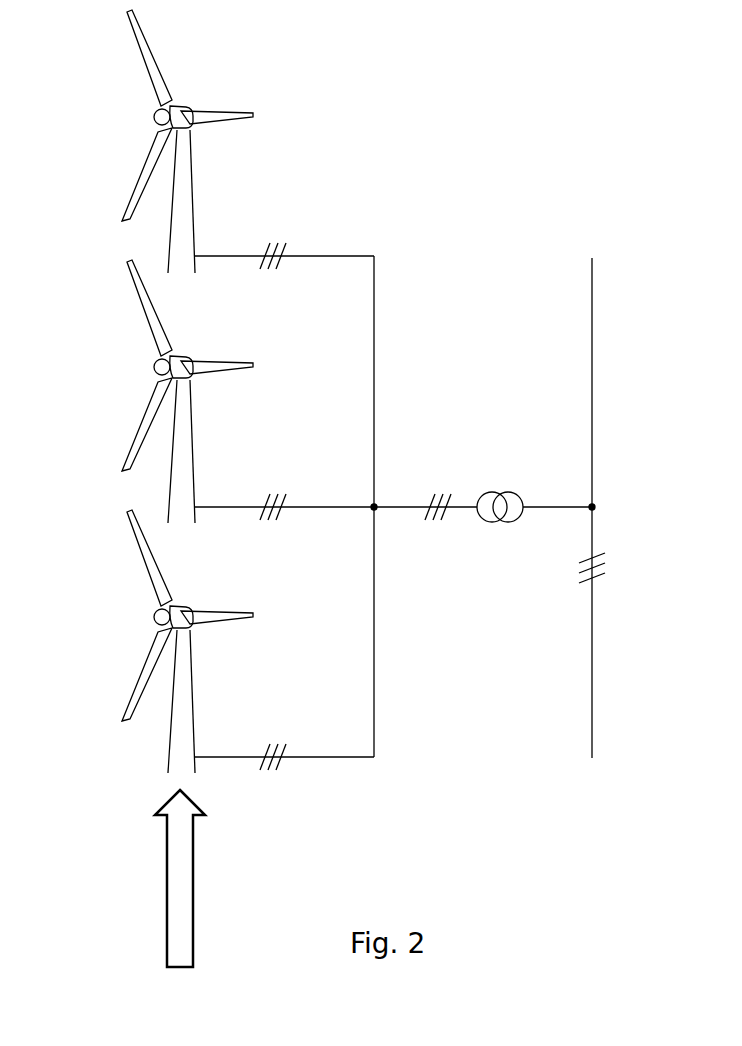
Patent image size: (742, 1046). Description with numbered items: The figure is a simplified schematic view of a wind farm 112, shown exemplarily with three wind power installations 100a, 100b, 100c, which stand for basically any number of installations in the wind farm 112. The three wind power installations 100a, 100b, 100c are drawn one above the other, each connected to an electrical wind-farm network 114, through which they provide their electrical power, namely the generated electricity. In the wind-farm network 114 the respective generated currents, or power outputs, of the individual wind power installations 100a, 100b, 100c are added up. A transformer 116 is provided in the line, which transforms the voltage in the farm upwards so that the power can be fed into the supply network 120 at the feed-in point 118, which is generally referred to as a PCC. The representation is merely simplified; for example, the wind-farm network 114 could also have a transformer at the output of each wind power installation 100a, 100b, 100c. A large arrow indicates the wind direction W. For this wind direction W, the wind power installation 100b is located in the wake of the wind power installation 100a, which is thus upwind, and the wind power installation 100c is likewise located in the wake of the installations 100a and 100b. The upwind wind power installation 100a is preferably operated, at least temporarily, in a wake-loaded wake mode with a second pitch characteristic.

The wind power installation 100a is at (173, 743).
The wind power installation 100b is at (185, 441).
The wind power installation 100c is at (187, 190).
The wind farm 112 is at (438, 113).
The electrical wind-farm network 114 is at (392, 502).
The transformer 116 is at (502, 483).
The feed-in point 118 is at (603, 485).
The supply network 120 is at (592, 285).
The wind direction W is at (193, 827).